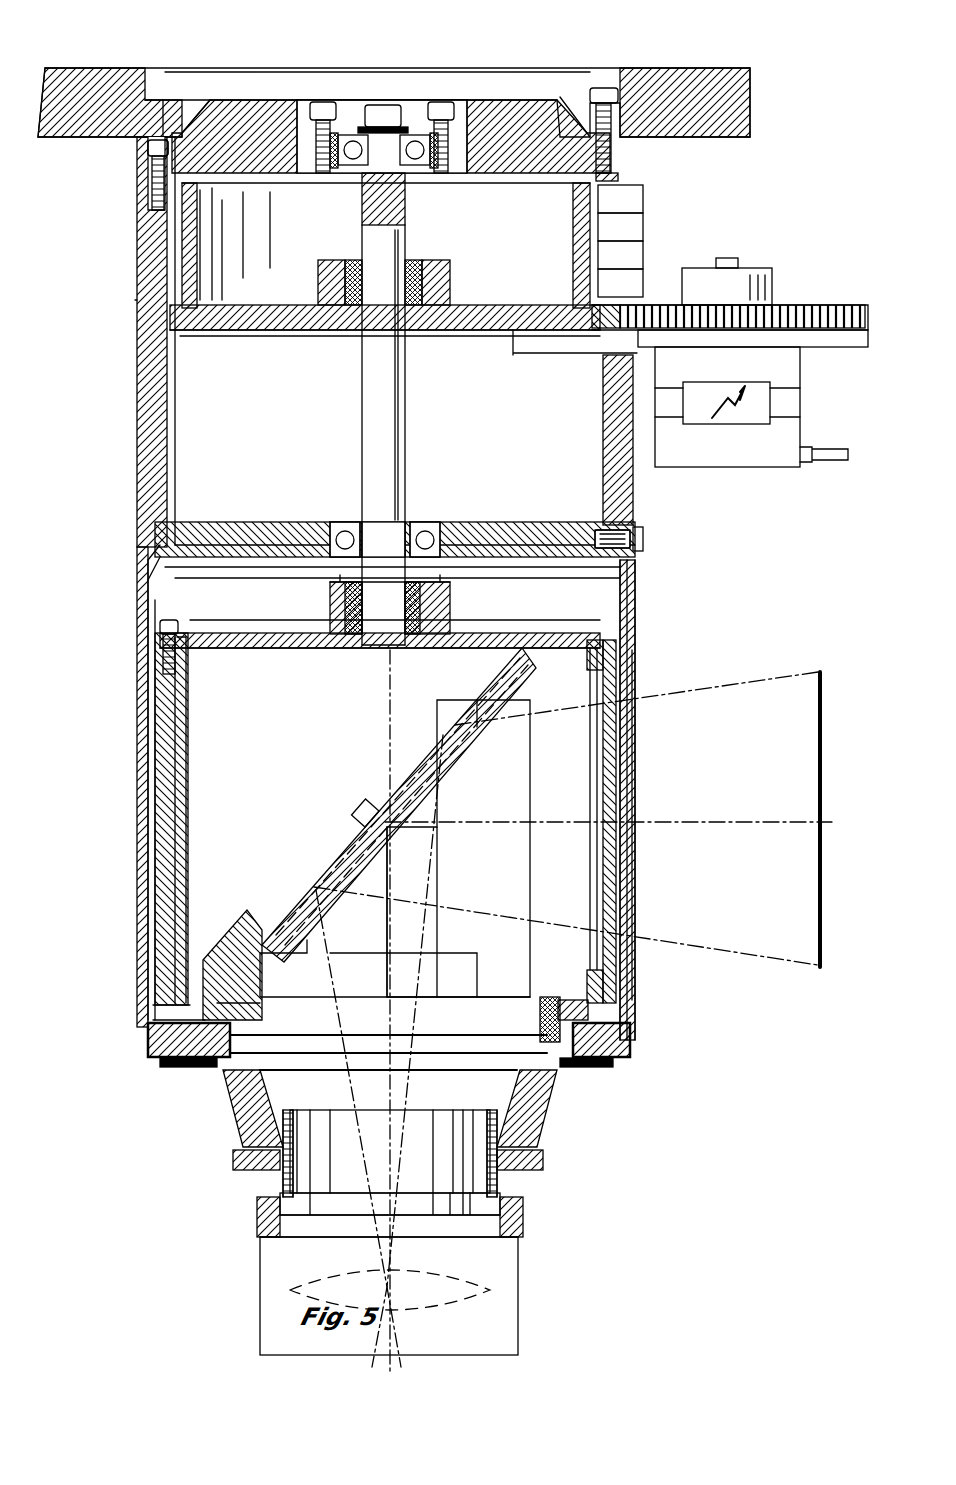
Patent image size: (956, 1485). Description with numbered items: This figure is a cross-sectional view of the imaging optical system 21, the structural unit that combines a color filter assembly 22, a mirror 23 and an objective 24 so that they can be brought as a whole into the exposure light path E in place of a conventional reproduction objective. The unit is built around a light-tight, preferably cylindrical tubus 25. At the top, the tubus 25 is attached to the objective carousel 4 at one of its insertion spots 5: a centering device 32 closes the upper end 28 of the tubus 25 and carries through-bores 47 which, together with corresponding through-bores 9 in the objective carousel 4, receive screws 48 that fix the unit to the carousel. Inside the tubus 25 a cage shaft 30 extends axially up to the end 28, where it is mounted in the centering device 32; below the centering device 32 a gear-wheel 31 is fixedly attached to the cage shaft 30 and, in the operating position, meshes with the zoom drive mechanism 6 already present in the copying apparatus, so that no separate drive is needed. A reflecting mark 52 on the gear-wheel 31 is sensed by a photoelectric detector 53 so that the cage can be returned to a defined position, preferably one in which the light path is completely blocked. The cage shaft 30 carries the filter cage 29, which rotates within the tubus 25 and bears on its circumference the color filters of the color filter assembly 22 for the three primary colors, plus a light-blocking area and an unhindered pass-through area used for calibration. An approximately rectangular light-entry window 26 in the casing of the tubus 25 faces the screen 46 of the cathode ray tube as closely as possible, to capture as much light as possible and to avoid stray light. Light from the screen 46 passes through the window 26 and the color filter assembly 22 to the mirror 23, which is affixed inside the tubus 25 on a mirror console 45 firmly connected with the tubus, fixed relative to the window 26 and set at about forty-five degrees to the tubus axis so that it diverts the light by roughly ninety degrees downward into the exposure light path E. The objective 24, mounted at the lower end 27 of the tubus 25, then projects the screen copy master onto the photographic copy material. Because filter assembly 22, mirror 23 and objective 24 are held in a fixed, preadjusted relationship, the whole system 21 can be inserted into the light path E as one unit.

The objective carousel 4 is at (115, 66).
The insertion spot 5 is at (214, 88).
The centering device 32 is at (500, 98).
The screws 48 is at (602, 92).
The through-bores 9 is at (620, 115).
The through-bores 47 is at (625, 176).
The end of the tubus 28 is at (146, 160).
The tubus 25 is at (140, 366).
The imaging optical system 21 is at (126, 496).
The gear-wheel 31 is at (568, 332).
The cage shaft 30 is at (392, 393).
The reflecting mark 52 is at (625, 212).
The photoelectric detector 53 is at (630, 246).
The zoom drive mechanism 6 is at (705, 462).
The filter cage 29 is at (160, 724).
The color filter assembly 22 is at (618, 676).
The light-entry window 26 is at (632, 692).
The screen 46 is at (816, 690).
The mirror 23 is at (445, 738).
The mirror console 45 is at (215, 950).
The lower end of the tubus 27 is at (165, 1075).
The objective 24 is at (285, 1297).
The exposure light path E is at (392, 1362).